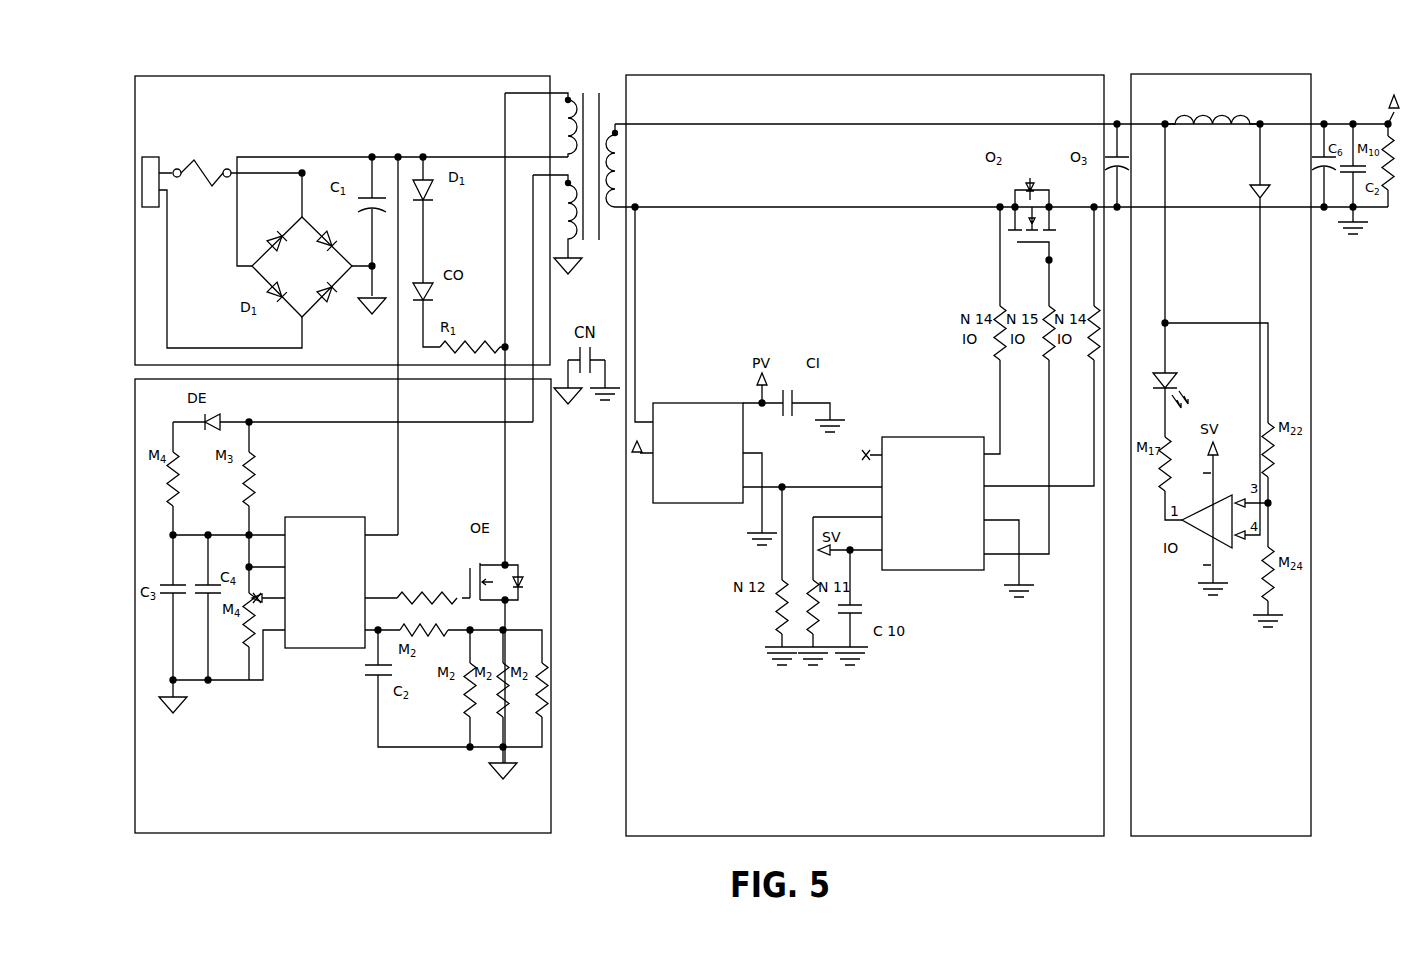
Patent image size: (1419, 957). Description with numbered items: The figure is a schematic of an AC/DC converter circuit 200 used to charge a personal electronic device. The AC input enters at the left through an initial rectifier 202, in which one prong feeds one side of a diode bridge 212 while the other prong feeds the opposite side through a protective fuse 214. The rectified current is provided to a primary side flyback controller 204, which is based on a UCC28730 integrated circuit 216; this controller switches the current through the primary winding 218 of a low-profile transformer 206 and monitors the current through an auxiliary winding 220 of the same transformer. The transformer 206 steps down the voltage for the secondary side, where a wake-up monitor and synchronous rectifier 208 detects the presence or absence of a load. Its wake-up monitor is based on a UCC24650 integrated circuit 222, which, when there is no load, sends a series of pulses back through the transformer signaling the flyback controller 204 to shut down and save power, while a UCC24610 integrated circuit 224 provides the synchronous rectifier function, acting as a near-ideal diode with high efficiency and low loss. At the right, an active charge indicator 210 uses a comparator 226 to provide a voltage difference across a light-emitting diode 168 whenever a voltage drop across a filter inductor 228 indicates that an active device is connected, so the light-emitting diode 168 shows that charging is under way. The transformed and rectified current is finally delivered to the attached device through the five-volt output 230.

The AC/DC converter circuit 200 is at (1286, 66).
The initial rectifier 202 is at (143, 97).
The primary side flyback controller 204 is at (266, 833).
The low-profile transformer 206 is at (543, 63).
The wake-up monitor and synchronous rectifier 208 is at (890, 836).
The active charge indicator 210 is at (1200, 836).
The diode bridge 212 is at (333, 245).
The protective fuse 214 is at (210, 173).
The UCC28730 integrated circuit 216 is at (365, 550).
The primary winding 218 is at (563, 128).
The auxiliary winding 220 is at (563, 213).
The UCC24650 integrated circuit 222 is at (653, 487).
The UCC24610 integrated circuit 224 is at (960, 570).
The comparator 226 is at (1232, 548).
The filter inductor 228 is at (1226, 116).
The 5-volt output 230 is at (1353, 123).
The light-emitting diode 168 is at (1166, 375).